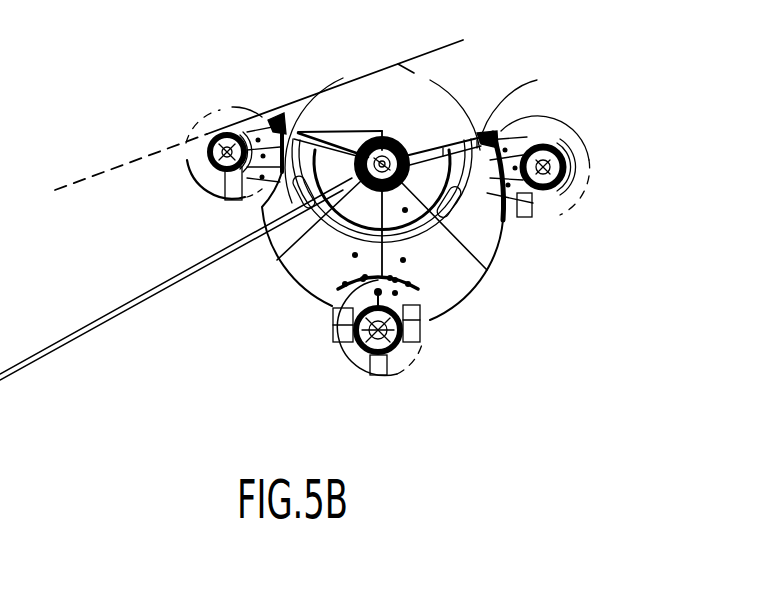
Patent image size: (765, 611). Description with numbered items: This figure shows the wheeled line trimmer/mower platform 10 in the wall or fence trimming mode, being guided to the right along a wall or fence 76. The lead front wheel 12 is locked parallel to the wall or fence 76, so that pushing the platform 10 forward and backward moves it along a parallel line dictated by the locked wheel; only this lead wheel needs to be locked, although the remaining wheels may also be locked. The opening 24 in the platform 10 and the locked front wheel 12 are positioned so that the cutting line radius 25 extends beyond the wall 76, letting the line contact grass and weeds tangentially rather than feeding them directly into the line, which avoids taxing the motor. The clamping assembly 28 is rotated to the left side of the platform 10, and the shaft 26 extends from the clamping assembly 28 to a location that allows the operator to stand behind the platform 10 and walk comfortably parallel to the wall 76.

The platform 10 is at (302, 293).
The front wheel 12 is at (508, 150).
The opening 24 is at (537, 80).
The cutting line radius 25 is at (438, 88).
The shaft 26 is at (132, 300).
The clamping assembly 28 is at (359, 132).
The wall or fence 76 is at (112, 167).